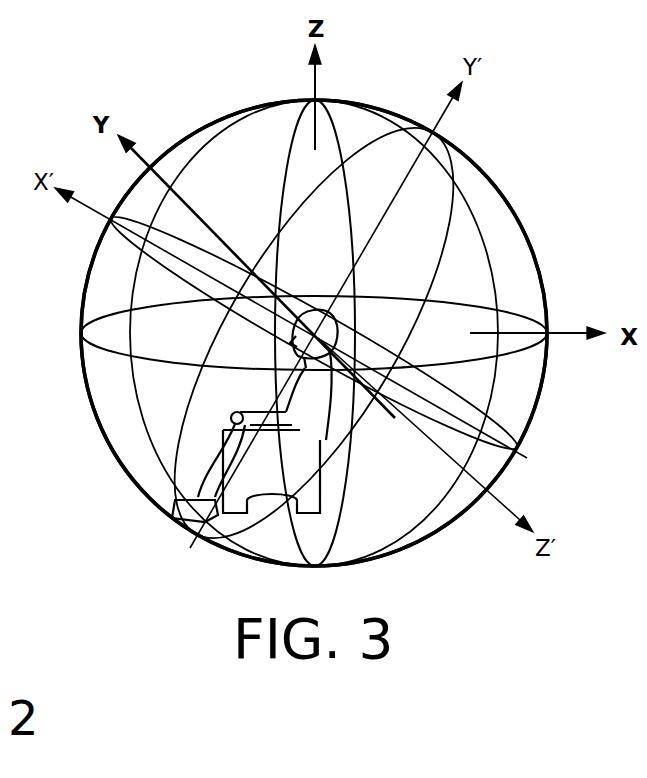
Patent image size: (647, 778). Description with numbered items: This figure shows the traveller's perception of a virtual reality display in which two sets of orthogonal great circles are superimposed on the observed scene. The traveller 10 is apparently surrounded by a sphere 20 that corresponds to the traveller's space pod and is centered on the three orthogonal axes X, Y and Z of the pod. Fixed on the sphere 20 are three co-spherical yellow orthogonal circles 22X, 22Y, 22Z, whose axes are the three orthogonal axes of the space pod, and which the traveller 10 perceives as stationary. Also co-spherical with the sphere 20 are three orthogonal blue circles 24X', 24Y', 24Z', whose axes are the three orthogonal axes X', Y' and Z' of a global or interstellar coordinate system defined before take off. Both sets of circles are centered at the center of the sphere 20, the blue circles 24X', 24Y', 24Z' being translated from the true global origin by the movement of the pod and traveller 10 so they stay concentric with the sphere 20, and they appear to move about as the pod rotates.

The sphere 20 is at (530, 113).
The yellow circle 22X is at (337, 130).
The yellow circle 22Y is at (493, 184).
The yellow circle 22Z is at (518, 316).
The blue circle 24X' is at (381, 333).
The blue circle 24Y' is at (264, 332).
The blue circle 24Z' is at (378, 333).
The traveller 10 is at (316, 303).